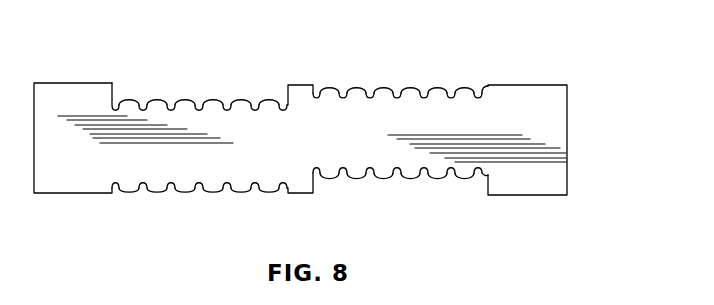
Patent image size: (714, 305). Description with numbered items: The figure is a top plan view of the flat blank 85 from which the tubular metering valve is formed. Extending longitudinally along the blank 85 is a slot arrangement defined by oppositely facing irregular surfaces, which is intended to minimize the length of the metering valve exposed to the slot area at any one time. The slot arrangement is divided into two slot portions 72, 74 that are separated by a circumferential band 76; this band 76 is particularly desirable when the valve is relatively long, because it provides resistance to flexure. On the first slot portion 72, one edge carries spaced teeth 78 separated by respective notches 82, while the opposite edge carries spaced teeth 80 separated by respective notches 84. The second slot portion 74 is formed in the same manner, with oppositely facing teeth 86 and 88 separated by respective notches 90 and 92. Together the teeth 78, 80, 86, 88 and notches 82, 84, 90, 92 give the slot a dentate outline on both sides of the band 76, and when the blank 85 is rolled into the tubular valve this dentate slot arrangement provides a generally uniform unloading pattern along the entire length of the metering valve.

The slot portion 72 is at (164, 80).
The slot portion 74 is at (372, 80).
The circumferential band 76 is at (300, 85).
The teeth 78 is at (129, 99).
The teeth 80 is at (134, 193).
The notches 82 is at (116, 107).
The notches 84 is at (116, 184).
The blank 85 is at (525, 85).
The teeth 86 is at (328, 87).
The teeth 88 is at (330, 181).
The notches 90 is at (316, 97).
The notches 92 is at (370, 168).